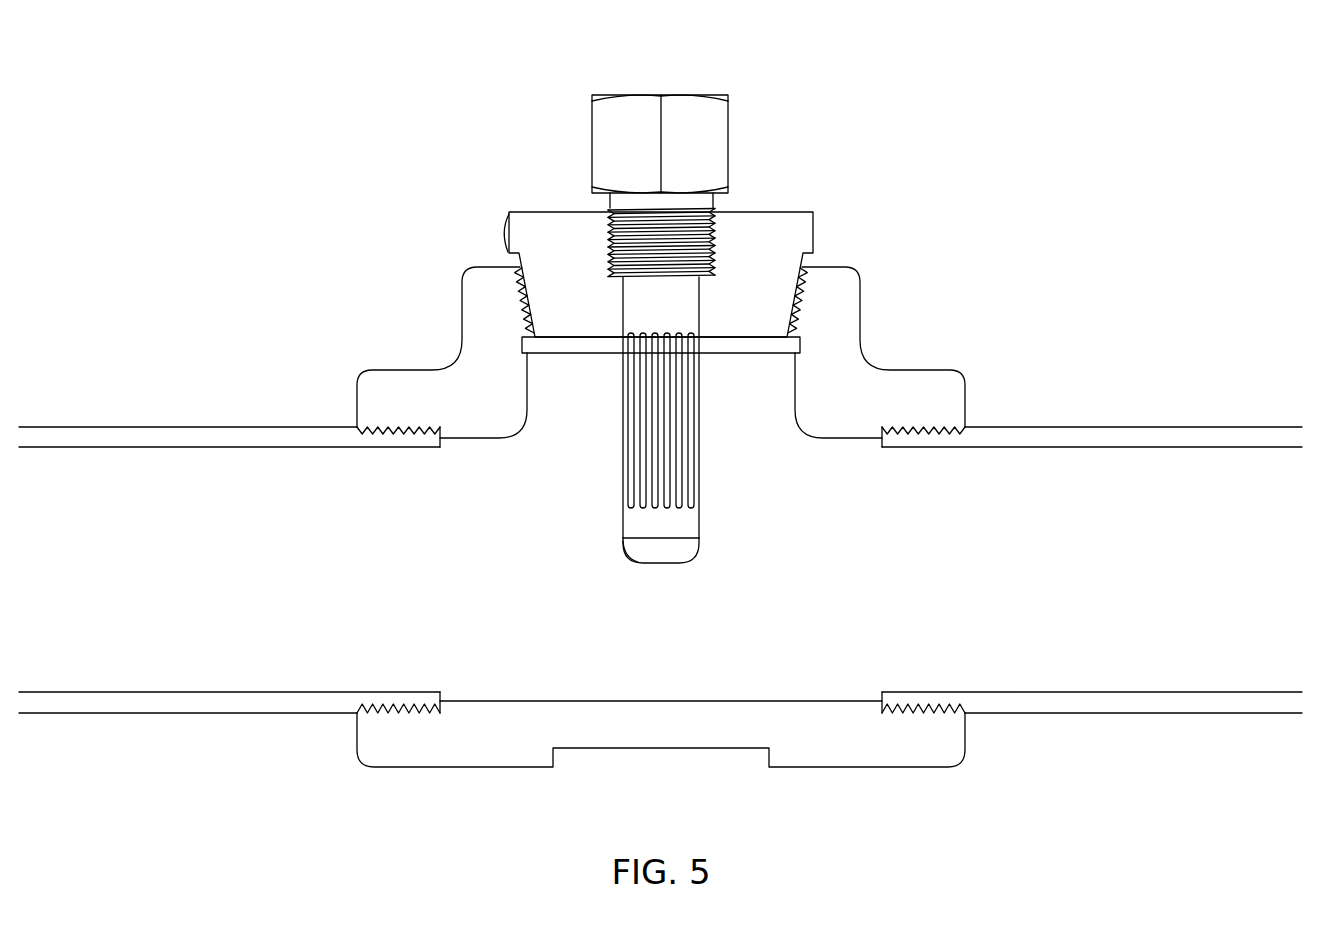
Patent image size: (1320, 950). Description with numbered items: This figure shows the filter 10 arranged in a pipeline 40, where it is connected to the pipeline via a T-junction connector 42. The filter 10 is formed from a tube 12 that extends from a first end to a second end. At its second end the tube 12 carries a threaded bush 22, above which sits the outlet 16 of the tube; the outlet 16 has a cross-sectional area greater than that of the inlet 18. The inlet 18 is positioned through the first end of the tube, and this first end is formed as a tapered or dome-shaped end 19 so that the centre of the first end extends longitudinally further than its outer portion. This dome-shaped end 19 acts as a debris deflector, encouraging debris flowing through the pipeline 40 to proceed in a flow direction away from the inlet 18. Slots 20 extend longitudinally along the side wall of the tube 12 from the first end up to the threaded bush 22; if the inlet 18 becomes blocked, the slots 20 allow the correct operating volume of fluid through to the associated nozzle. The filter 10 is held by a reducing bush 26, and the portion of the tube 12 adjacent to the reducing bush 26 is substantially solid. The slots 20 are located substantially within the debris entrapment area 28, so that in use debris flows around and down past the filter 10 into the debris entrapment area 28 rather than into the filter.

The filter 10 is at (680, 397).
The tube 12 is at (638, 308).
The outlet 16 is at (664, 97).
The inlet 18 is at (660, 565).
The dome-shaped end 19 is at (628, 550).
The slots 20 is at (638, 442).
The threaded bush 22 is at (710, 243).
The reducing bush 26 is at (795, 237).
The debris entrapment area 28 is at (560, 397).
The pipeline 40 is at (1122, 716).
The T-junction connector 42 is at (913, 368).